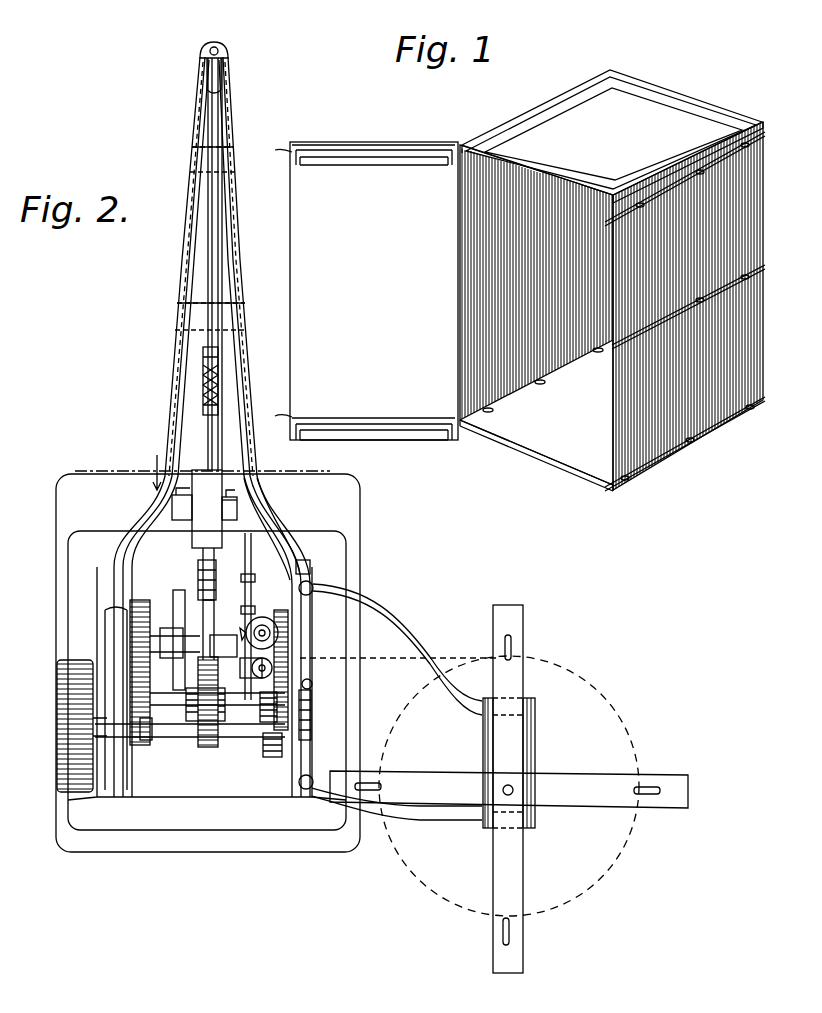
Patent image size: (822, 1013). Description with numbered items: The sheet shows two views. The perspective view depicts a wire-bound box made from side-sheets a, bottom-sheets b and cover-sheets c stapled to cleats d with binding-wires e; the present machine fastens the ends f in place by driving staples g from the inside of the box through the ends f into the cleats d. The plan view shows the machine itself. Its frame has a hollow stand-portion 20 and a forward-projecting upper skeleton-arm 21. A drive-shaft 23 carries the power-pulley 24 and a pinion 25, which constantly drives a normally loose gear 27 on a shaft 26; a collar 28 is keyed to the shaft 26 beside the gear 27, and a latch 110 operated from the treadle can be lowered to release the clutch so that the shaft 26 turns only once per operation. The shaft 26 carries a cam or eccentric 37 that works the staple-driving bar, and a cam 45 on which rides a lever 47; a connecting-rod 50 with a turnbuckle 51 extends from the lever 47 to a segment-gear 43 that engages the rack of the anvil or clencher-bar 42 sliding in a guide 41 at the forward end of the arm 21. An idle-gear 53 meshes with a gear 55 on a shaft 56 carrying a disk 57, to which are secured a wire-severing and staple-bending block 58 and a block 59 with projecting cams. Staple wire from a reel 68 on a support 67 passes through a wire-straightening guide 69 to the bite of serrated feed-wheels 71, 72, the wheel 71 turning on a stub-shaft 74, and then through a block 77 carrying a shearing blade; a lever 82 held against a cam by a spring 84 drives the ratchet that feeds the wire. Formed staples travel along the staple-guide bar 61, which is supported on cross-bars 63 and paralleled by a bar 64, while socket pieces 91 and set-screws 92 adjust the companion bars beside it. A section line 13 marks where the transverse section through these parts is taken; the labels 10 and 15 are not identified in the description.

In FIG. 1, the side-sheets a is at (462, 270).
In FIG. 1, the bottom-sheets b is at (690, 95).
In FIG. 1, the cover-sheets c is at (366, 291).
In FIG. 1, the cleats d is at (380, 152).
In FIG. 1, the binding-wires e is at (748, 243).
In FIG. 1, the ends f is at (540, 470).
In FIG. 1, the staples g is at (603, 345).
In FIG. 2, the mechanism 10 is at (232, 630).
In FIG. 2, the section line 13 is at (202, 472).
In FIG. 2, the cable 15 is at (313, 588).
In FIG. 2, the hollow stand-portion 20 is at (200, 812).
In FIG. 2, the upper skeleton-arm 21 is at (180, 343).
In FIG. 2, the drive-shaft 23 is at (176, 738).
In FIG. 2, the power-pulley 24 is at (70, 727).
In FIG. 2, the pinion 25 is at (270, 758).
In FIG. 2, the shaft 26 is at (170, 630).
In FIG. 2, the normally loose gear 27 is at (292, 556).
In FIG. 2, the collar 28 is at (216, 640).
In FIG. 2, the cam or eccentric 37 is at (216, 600).
In FIG. 2, the guide 41 is at (218, 44).
In FIG. 2, the anvil or clencher-bar 42 is at (222, 52).
In FIG. 2, the segment-gear 43 is at (208, 64).
In FIG. 2, the cam 45 is at (130, 640).
In FIG. 2, the lever 47 is at (178, 683).
In FIG. 2, the connecting-rod 50 is at (208, 430).
In FIG. 2, the turnbuckle 51 is at (222, 378).
In FIG. 2, the idle-gear 53 is at (128, 603).
In FIG. 2, the gear 55 is at (148, 741).
In FIG. 2, the shaft 56 is at (258, 710).
In FIG. 2, the disk 57 is at (210, 749).
In FIG. 2, the wire-severing and staple-wire-bending block 58 is at (252, 672).
In FIG. 2, the block 59 is at (190, 698).
In FIG. 2, the staple-guide 61 is at (200, 578).
In FIG. 2, the cross-bars 63 is at (232, 160).
In FIG. 2, the bar 64 is at (208, 509).
In FIG. 2, the support 67 is at (483, 758).
In FIG. 2, the staple-wire reel 68 is at (512, 738).
In FIG. 2, the wire-straightening guide 69 is at (290, 656).
In FIG. 2, the staple-wire feed-wheel 71 is at (292, 566).
In FIG. 2, the staple-wire feed-wheel 72 is at (323, 683).
In FIG. 2, the stub-shaft 74 is at (280, 636).
In FIG. 2, the block 77 is at (225, 648).
In FIG. 2, the lever 82 is at (311, 725).
In FIG. 2, the spring 84 is at (320, 678).
In FIG. 2, the socket pieces 91 is at (238, 506).
In FIG. 2, the set-screws 92 is at (172, 508).
In FIG. 2, the latch 110 is at (280, 560).